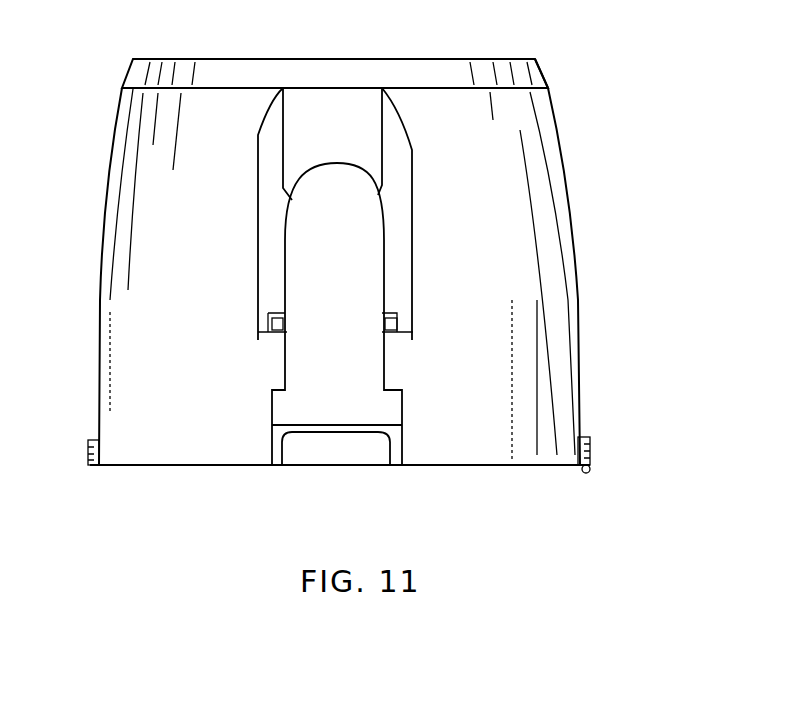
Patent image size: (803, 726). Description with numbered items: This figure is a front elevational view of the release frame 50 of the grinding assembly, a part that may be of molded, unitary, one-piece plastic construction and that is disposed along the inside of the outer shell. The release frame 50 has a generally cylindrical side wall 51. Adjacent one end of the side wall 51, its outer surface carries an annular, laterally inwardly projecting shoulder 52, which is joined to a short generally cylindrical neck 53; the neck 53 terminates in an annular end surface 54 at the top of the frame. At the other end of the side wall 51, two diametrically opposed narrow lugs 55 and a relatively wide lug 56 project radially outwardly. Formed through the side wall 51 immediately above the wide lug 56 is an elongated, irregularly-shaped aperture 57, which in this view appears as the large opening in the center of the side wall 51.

The release frame 50 is at (672, 129).
The side wall 51 is at (128, 297).
The shoulder 52 is at (548, 84).
The neck 53 is at (537, 66).
The annular end surface 54 is at (408, 40).
The narrow lugs 55 is at (88, 455).
The wide lug 56 is at (316, 455).
The aperture 57 is at (284, 358).